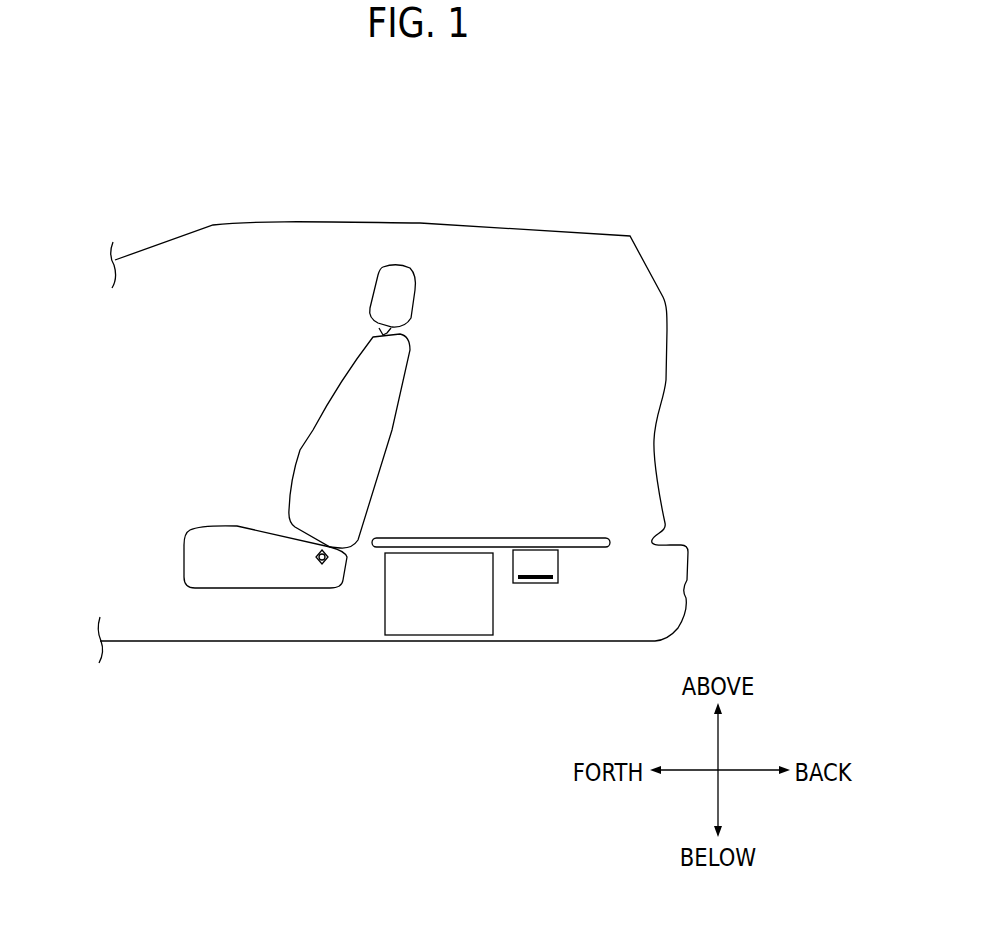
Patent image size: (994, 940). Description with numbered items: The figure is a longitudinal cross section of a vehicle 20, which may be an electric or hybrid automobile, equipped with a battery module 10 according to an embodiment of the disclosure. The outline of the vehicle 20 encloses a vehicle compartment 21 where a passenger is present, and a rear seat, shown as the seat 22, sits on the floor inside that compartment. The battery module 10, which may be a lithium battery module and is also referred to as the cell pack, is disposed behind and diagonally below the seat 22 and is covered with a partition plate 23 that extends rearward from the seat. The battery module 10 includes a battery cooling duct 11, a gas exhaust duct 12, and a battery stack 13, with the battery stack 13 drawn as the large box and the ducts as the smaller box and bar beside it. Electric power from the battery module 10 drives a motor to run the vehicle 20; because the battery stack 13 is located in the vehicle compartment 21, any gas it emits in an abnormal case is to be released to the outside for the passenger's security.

The battery module 10 is at (475, 664).
The battery cooling duct 11 is at (560, 584).
The gas exhaust duct 12 is at (527, 584).
The battery stack 13 is at (412, 636).
The vehicle 20 is at (290, 170).
The vehicle compartment 21 is at (472, 275).
The seat 22 is at (400, 263).
The partition plate 23 is at (545, 537).